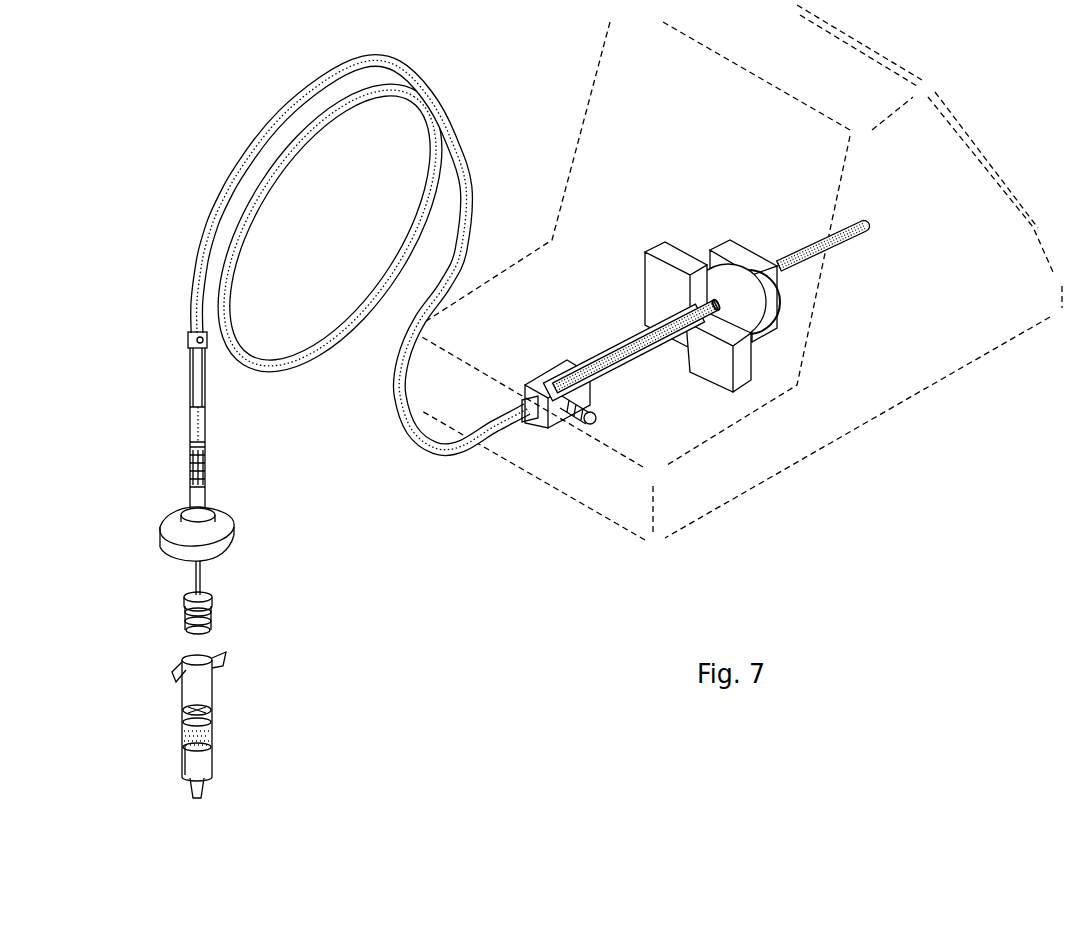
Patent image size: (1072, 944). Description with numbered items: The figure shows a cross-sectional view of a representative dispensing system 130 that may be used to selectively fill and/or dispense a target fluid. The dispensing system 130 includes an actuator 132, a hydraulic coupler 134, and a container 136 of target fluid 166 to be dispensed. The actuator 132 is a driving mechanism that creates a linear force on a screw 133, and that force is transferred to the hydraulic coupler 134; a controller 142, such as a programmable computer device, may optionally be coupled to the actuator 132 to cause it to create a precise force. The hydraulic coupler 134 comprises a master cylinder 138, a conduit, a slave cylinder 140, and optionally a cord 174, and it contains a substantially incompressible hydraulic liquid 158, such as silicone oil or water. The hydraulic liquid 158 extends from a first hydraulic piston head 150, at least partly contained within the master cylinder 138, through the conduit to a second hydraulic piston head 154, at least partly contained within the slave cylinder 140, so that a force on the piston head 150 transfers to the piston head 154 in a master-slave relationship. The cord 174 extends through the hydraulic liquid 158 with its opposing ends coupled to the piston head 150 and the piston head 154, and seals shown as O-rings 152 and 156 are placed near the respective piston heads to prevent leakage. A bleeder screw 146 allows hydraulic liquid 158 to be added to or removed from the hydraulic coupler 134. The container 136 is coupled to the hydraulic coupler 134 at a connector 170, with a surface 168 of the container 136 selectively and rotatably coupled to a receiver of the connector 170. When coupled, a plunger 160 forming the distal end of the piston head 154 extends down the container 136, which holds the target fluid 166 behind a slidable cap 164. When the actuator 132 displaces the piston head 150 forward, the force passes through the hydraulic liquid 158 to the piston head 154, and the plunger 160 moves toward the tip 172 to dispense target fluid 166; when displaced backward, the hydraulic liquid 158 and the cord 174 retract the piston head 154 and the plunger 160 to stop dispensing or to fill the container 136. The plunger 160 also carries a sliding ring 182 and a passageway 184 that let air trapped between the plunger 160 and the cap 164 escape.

The dispensing system 130 is at (146, 155).
The actuator 132 is at (762, 313).
The screw 133 is at (672, 338).
The hydraulic coupler 134 is at (460, 98).
The container 136 is at (213, 756).
The master cylinder 138 is at (596, 354).
The slave cylinder 140 is at (208, 491).
The controller 142 is at (966, 275).
The bleeder screw 146 is at (594, 440).
The first hydraulic piston head 150 is at (612, 350).
The O-ring 152 is at (635, 346).
The second hydraulic piston head 154 is at (207, 443).
The O-ring 156 is at (207, 462).
The hydraulic liquid 158 is at (333, 72).
The plunger 160 is at (214, 626).
The cap 164 is at (184, 718).
The target fluid 166 is at (184, 737).
The surface 168 is at (180, 663).
The connector 170 is at (155, 537).
The tip 172 is at (203, 790).
The cord 174 is at (472, 150).
The sliding ring 182 is at (216, 609).
The passageway 184 is at (220, 604).